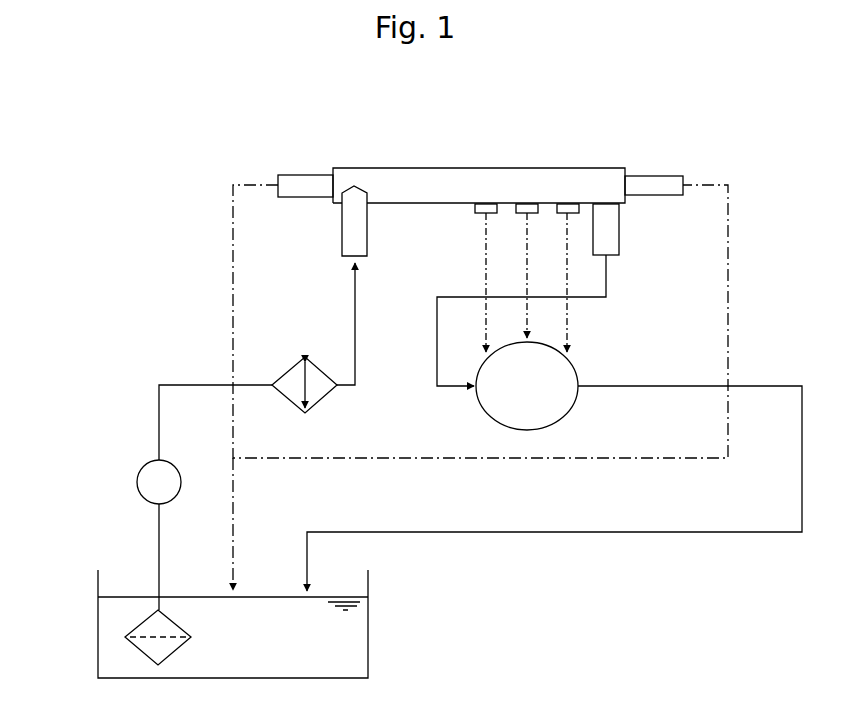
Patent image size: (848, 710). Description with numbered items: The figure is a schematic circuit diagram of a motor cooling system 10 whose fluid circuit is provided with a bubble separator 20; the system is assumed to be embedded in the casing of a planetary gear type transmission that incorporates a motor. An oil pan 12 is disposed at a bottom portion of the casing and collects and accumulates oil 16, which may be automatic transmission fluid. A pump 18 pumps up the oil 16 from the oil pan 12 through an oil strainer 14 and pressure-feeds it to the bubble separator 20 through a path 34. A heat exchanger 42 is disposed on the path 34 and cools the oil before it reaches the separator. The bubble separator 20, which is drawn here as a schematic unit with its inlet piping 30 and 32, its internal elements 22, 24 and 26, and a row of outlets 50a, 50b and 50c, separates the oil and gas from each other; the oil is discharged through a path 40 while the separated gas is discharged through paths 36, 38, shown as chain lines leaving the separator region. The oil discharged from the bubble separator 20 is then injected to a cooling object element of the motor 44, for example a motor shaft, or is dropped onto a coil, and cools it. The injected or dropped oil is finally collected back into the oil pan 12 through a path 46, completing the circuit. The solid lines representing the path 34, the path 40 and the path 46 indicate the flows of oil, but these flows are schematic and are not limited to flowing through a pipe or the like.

The motor cooling system 10 is at (92, 183).
The oil pan 12 is at (98, 583).
The oil strainer 14 is at (155, 627).
The oil 16 is at (340, 637).
The pump 18 is at (136, 485).
The bubble separator 20 is at (524, 127).
The fuel rail 22 is at (562, 167).
The inlet port 24 is at (342, 222).
The pressure sensor 26 is at (619, 219).
The inlet pipe 30 is at (305, 175).
The outlet pipe 32 is at (655, 176).
The path 34 is at (158, 427).
The path 36 is at (233, 272).
The path 38 is at (728, 268).
The path 40 is at (606, 290).
The heat exchanger 42 is at (323, 397).
The motor 44 is at (572, 406).
The path 46 is at (678, 532).
The injector 50a is at (485, 215).
The injector 50b is at (520, 215).
The injector 50c is at (558, 215).